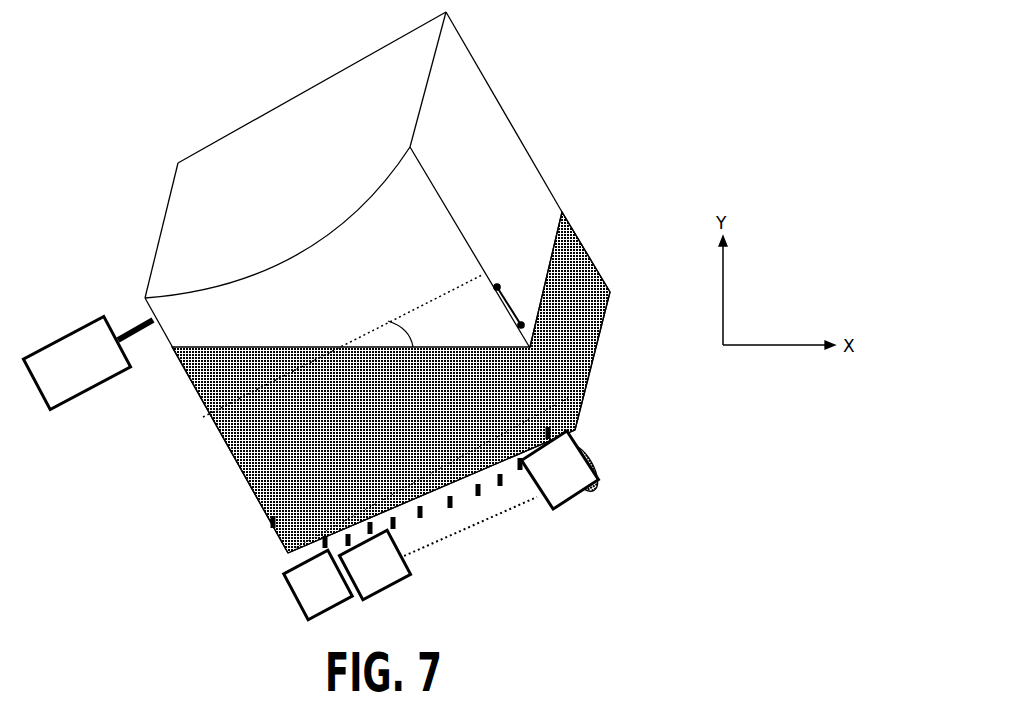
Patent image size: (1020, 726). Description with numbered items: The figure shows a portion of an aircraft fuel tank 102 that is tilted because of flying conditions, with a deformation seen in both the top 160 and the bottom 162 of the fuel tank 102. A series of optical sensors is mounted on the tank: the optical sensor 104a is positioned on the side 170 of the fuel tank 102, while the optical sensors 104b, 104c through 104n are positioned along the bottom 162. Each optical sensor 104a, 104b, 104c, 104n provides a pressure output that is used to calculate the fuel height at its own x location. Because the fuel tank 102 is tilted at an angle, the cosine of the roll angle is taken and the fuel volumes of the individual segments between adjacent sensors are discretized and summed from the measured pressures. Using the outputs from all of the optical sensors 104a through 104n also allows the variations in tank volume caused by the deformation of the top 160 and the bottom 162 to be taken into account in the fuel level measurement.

The fuel tank 102 is at (360, 282).
The top 160 is at (334, 107).
The side 170 is at (218, 452).
The bottom 162 is at (458, 500).
The optical sensor 104a is at (88, 362).
The optical sensor 104b is at (318, 584).
The optical sensor 104c is at (374, 564).
The optical sensor 104n is at (563, 470).